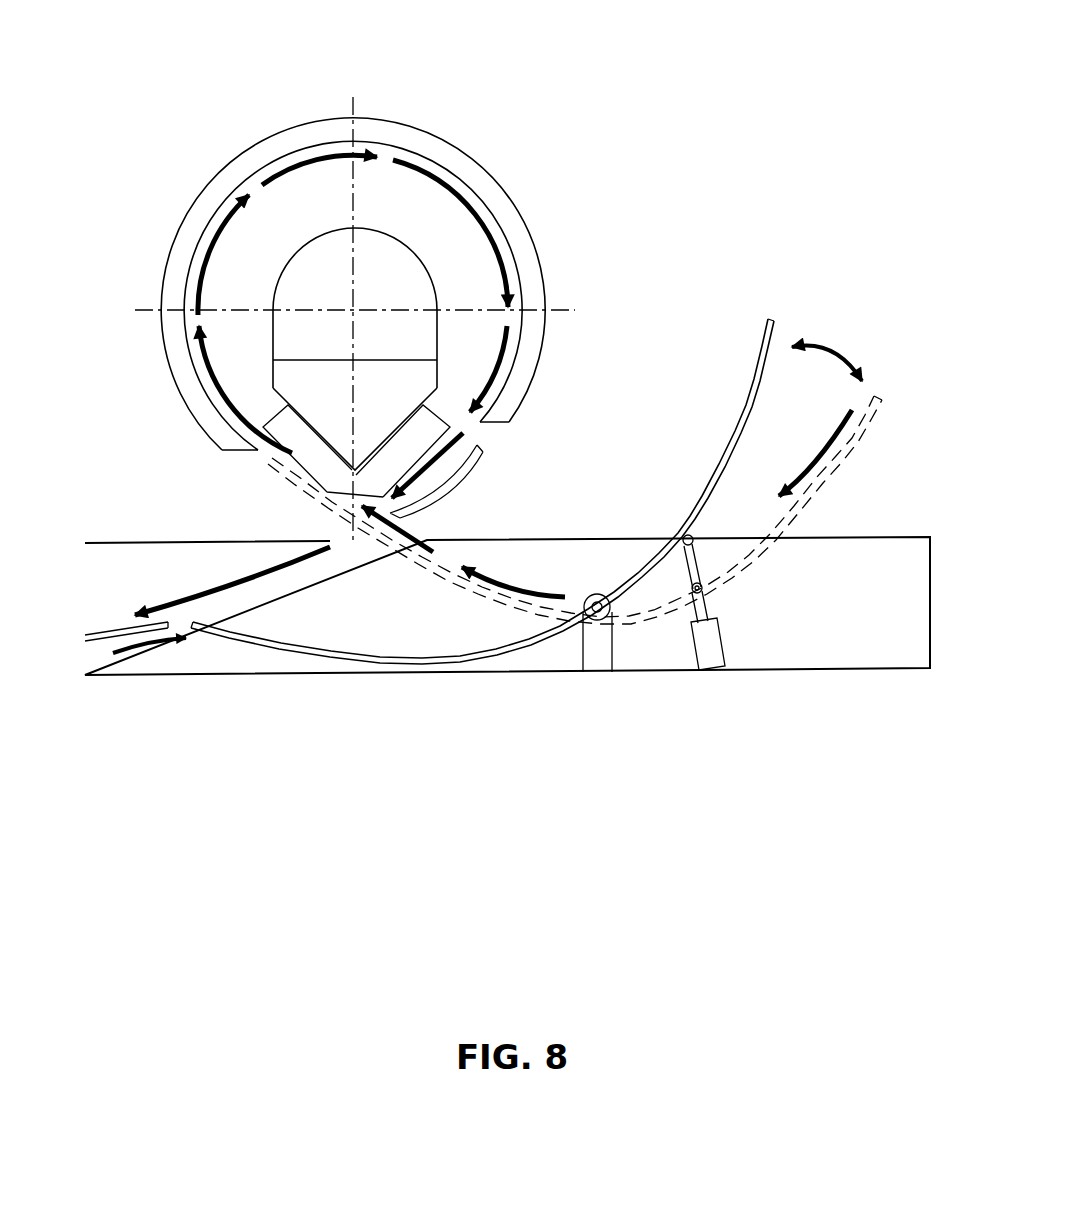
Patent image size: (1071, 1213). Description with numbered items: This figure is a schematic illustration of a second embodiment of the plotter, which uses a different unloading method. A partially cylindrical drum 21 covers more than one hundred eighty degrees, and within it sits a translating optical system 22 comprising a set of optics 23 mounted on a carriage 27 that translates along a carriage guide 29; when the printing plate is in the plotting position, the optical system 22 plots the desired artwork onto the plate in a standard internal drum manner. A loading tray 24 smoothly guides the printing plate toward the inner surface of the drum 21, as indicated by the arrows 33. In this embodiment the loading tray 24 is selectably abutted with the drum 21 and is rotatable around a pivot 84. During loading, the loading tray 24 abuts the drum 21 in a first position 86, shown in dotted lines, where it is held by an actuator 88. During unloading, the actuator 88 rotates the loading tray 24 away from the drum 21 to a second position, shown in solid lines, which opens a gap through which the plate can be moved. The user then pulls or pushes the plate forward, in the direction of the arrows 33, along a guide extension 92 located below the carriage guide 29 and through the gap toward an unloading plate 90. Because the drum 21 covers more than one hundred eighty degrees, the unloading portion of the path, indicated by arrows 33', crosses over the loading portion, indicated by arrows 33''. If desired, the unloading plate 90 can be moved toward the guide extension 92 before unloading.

The partially cylindrical drum 21 is at (530, 258).
The translating optical system 22 is at (425, 220).
The set of optics 23 is at (418, 253).
The carriage 27 is at (280, 382).
The carriage guide 29 is at (435, 410).
The arrows 33 is at (353, 228).
The arrows 33' is at (372, 602).
The arrows 33'' is at (463, 639).
The loading tray 24 is at (510, 658).
The pivot 84 is at (598, 663).
The first position 86 is at (869, 740).
The actuator 88 is at (713, 660).
The unloading plate 90 is at (92, 643).
The guide extension 92 is at (483, 455).